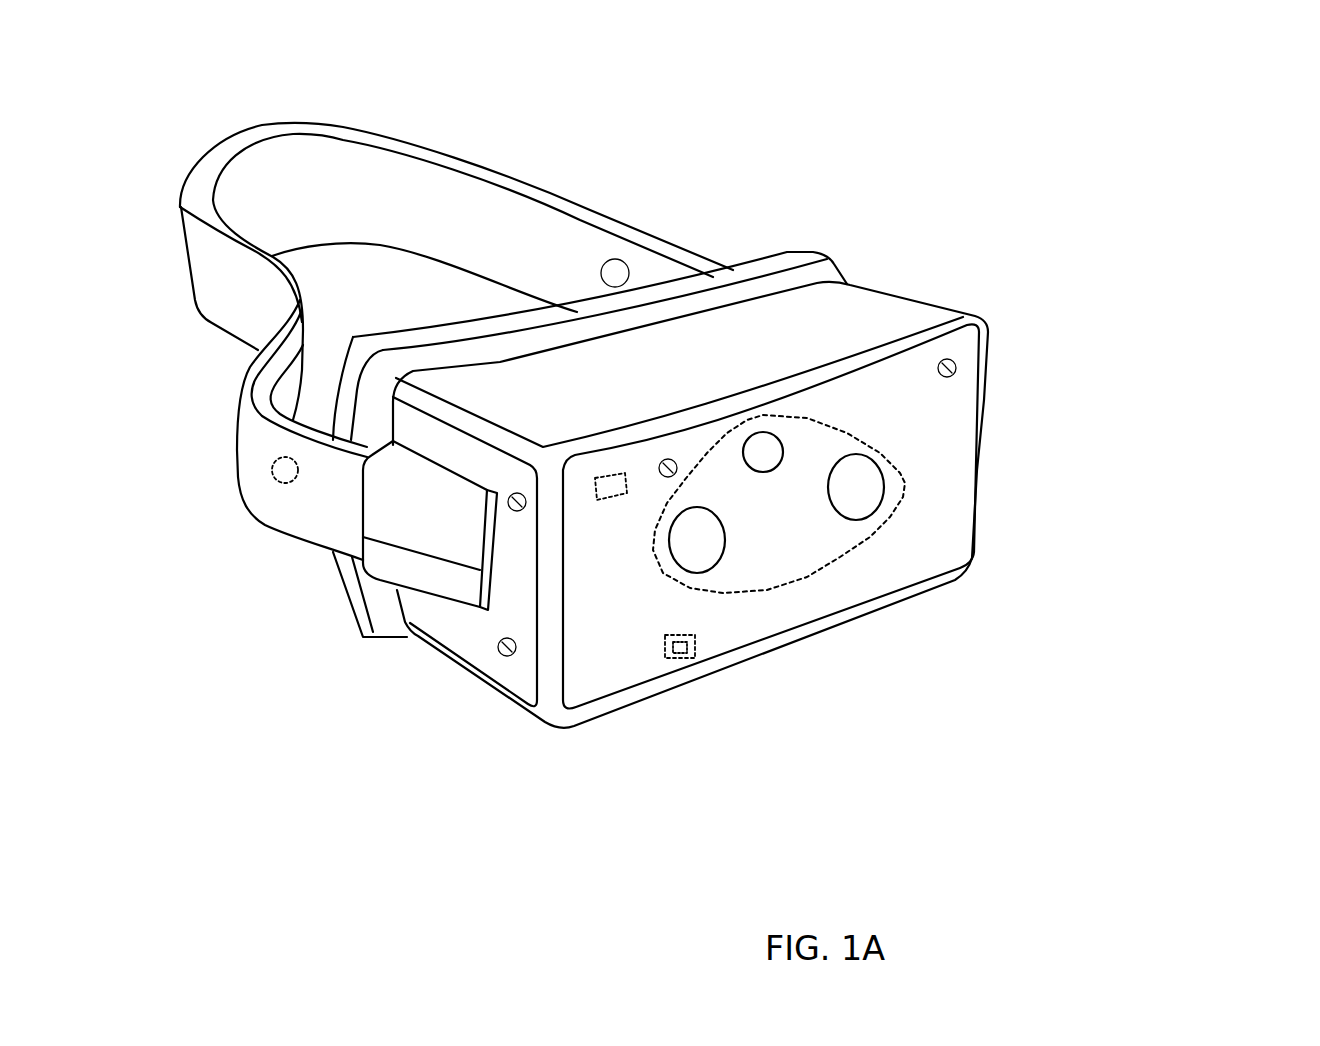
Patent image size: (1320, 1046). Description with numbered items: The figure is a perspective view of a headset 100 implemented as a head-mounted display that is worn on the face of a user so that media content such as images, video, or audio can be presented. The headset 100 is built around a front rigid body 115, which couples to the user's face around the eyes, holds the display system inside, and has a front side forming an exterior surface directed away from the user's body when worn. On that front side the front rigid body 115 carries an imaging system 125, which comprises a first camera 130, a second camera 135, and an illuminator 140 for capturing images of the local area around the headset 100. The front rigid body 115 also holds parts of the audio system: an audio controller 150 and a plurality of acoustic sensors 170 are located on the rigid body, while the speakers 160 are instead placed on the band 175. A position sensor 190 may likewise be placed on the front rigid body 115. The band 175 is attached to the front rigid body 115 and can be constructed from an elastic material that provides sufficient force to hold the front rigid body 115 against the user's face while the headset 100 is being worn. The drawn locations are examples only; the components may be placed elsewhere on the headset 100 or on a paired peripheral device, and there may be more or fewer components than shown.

The headset 100 is at (265, 94).
The front rigid body 115 is at (980, 323).
The imaging system 125 is at (907, 478).
The camera 130 is at (727, 550).
The camera 135 is at (885, 497).
The illuminator 140 is at (780, 438).
The audio controller 150 is at (595, 502).
The speaker 160 is at (277, 483).
The acoustic sensor 170 is at (500, 649).
The band 175 is at (593, 210).
The position sensor 190 is at (697, 647).